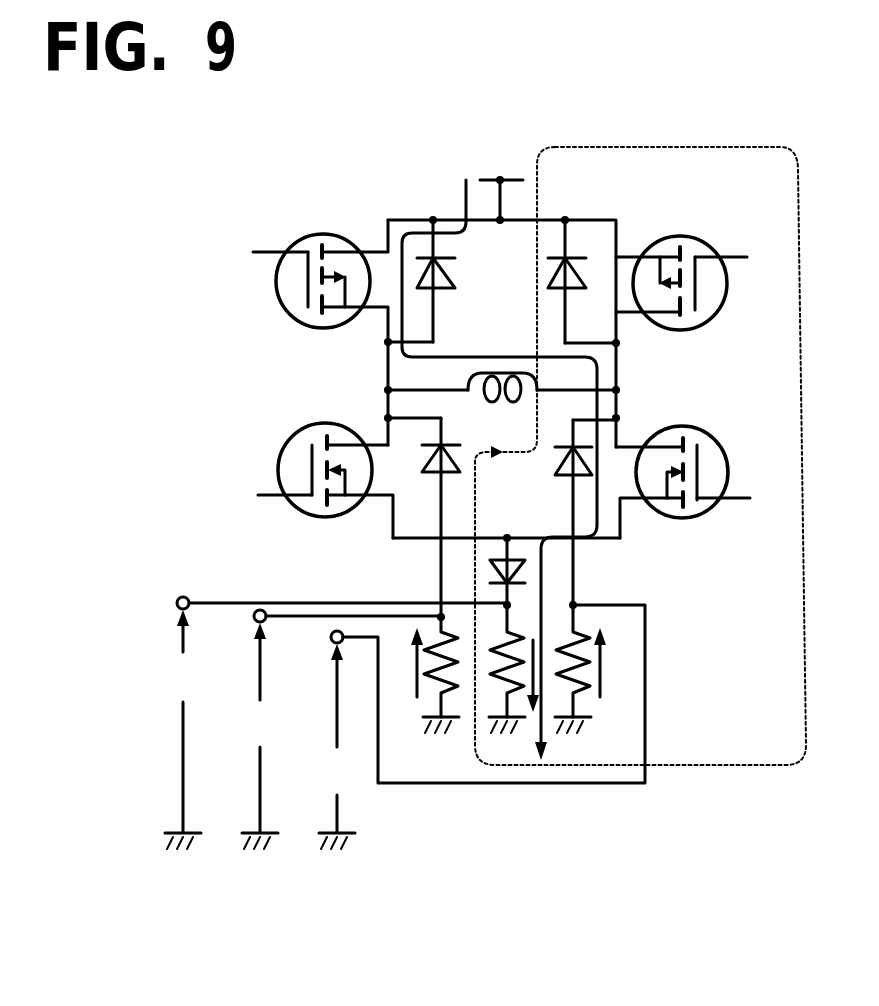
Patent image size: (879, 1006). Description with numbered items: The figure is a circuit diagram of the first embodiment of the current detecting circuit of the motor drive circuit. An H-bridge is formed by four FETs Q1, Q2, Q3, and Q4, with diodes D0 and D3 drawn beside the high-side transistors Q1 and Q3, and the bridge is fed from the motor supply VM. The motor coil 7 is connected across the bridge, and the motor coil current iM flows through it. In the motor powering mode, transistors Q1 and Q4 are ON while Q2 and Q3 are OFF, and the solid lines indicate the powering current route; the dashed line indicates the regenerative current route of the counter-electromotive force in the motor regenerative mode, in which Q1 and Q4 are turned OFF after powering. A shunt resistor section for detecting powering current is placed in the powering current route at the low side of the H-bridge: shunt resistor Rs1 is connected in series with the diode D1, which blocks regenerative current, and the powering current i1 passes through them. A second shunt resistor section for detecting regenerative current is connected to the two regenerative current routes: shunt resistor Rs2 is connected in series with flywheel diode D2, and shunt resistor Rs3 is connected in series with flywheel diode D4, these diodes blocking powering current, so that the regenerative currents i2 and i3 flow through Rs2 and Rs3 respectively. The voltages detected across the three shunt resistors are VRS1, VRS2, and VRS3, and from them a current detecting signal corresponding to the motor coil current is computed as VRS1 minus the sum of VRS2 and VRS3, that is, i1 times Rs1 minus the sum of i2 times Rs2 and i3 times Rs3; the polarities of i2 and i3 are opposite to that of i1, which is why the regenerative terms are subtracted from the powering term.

The motor coil (inductive load) 7 is at (493, 403).
The FET Q1 is at (305, 284).
The FET Q2 is at (308, 471).
The FET Q3 is at (703, 288).
The FET Q4 is at (704, 472).
The diode D0 is at (455, 270).
The diode for blocking regenerative current D1 is at (518, 569).
The flywheel diode D2 is at (434, 474).
The diode D3 is at (568, 265).
The flywheel diode D4 is at (566, 481).
The shunt resistor Rs1 is at (507, 693).
The shunt resistor Rs2 is at (443, 693).
The shunt resistor Rs3 is at (585, 690).
The motor supply voltage VM is at (501, 174).
The detected potential of shunt resistor Rs1 VRS1 is at (178, 723).
The detected potential of shunt resistor Rs2 VRS2 is at (258, 729).
The detected potential of shunt resistor Rs3 VRS3 is at (335, 740).
The motor current iM is at (520, 343).
The current i1 is at (528, 654).
The current i2 is at (405, 662).
The current i3 is at (612, 662).